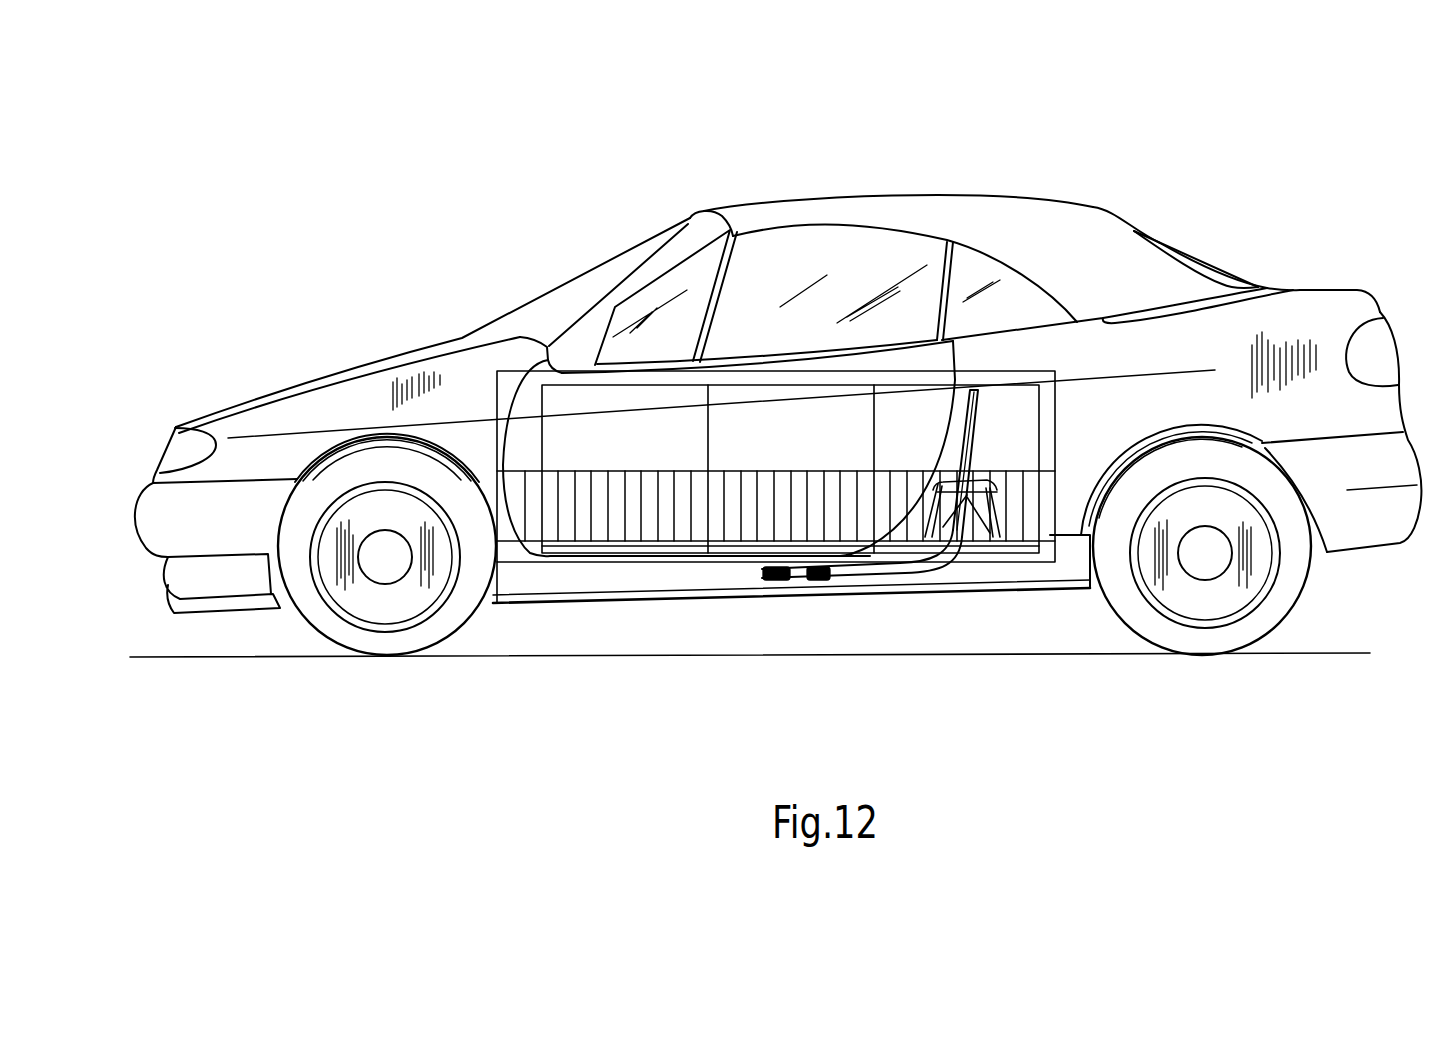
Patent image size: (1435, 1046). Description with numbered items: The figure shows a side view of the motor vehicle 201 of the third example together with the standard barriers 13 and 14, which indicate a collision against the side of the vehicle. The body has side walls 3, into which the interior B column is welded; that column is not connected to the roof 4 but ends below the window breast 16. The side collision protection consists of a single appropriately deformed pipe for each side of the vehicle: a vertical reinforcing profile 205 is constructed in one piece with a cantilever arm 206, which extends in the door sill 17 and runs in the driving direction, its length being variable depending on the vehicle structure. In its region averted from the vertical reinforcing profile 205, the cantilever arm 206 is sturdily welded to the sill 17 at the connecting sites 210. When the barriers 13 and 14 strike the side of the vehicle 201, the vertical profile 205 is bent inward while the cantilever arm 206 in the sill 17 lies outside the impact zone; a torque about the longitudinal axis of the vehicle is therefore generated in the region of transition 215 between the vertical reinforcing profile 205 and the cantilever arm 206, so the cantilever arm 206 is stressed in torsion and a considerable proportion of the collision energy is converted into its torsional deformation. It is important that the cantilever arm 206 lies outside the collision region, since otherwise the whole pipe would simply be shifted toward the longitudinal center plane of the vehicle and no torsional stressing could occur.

The motor vehicle 201 is at (1148, 210).
The side wall 3 is at (1105, 421).
The roof 4 is at (953, 225).
The barrier 13 is at (533, 380).
The barrier 14 is at (542, 438).
The window breast 16 is at (1002, 333).
The door sill 17 is at (638, 573).
The vertical reinforcing profile 205 is at (978, 420).
The cantilever arm 206 is at (853, 578).
The connecting sites 210 is at (782, 583).
The region of transition 215 is at (942, 560).